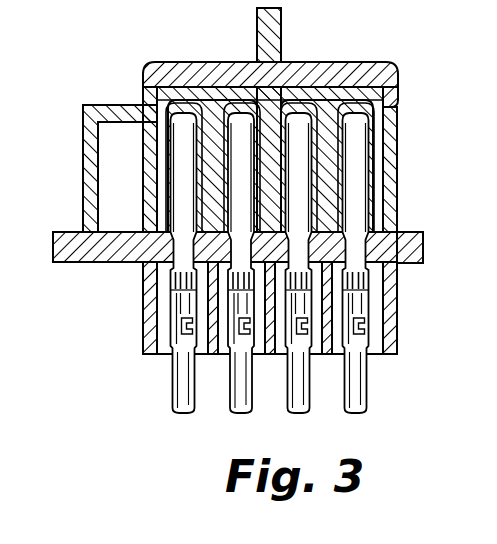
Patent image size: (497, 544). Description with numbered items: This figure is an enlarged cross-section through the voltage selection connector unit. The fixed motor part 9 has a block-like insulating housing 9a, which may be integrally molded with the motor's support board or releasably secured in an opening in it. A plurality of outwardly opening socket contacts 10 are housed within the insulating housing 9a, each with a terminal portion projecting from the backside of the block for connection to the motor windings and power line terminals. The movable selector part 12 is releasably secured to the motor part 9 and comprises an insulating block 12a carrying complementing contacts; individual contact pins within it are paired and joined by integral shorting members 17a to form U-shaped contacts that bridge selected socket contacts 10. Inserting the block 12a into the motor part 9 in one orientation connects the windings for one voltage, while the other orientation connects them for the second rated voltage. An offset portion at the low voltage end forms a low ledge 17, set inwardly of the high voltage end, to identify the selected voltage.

The motor part 9 is at (397, 154).
The insulating housing 9a is at (394, 207).
The socket contacts 10 is at (168, 263).
The movable selector part 12 is at (363, 65).
The insulating block 12a is at (393, 93).
The low ledge 17 is at (103, 112).
The shorting members 17a is at (204, 97).